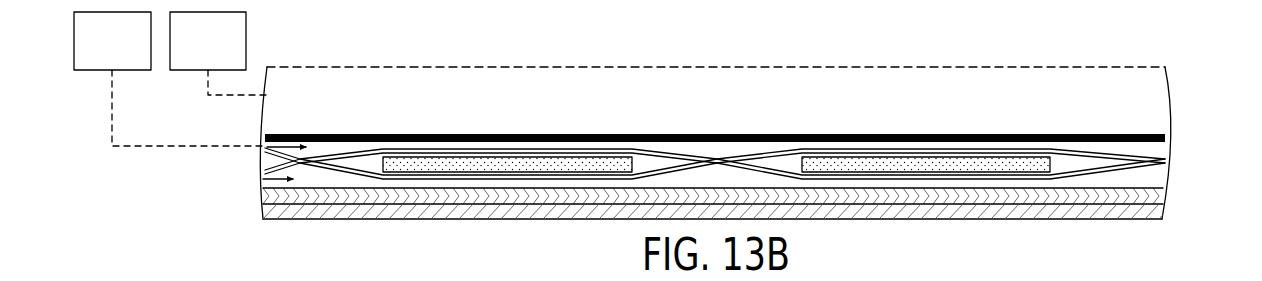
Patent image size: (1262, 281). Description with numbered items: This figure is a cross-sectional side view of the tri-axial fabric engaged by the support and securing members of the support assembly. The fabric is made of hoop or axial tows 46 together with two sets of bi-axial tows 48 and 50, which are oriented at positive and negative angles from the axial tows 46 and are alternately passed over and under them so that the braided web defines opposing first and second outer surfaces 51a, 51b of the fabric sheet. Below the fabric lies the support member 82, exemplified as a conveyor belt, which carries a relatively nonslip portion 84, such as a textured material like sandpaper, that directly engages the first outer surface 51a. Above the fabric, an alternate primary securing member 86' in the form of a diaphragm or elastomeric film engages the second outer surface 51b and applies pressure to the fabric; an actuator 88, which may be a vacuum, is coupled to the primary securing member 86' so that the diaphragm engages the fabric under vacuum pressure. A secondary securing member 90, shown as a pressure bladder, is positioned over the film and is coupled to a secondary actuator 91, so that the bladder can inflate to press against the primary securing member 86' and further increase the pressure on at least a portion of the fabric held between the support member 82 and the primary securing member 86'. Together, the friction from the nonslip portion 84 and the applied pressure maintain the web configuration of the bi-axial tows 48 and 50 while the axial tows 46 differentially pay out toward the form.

The actuator 88 is at (116, 55).
The secondary actuator 91 is at (212, 55).
The secondary securing member 90 is at (925, 82).
The alternate primary securing member 86' is at (753, 129).
The nonslip portion 84 is at (1144, 197).
The support member 82 is at (1152, 212).
The axial tows 46 is at (465, 150).
The bi-axial tows 48 is at (427, 171).
The bi-axial tows 50 is at (612, 143).
The first outer surface 51a is at (260, 181).
The second outer surface 51b is at (266, 143).